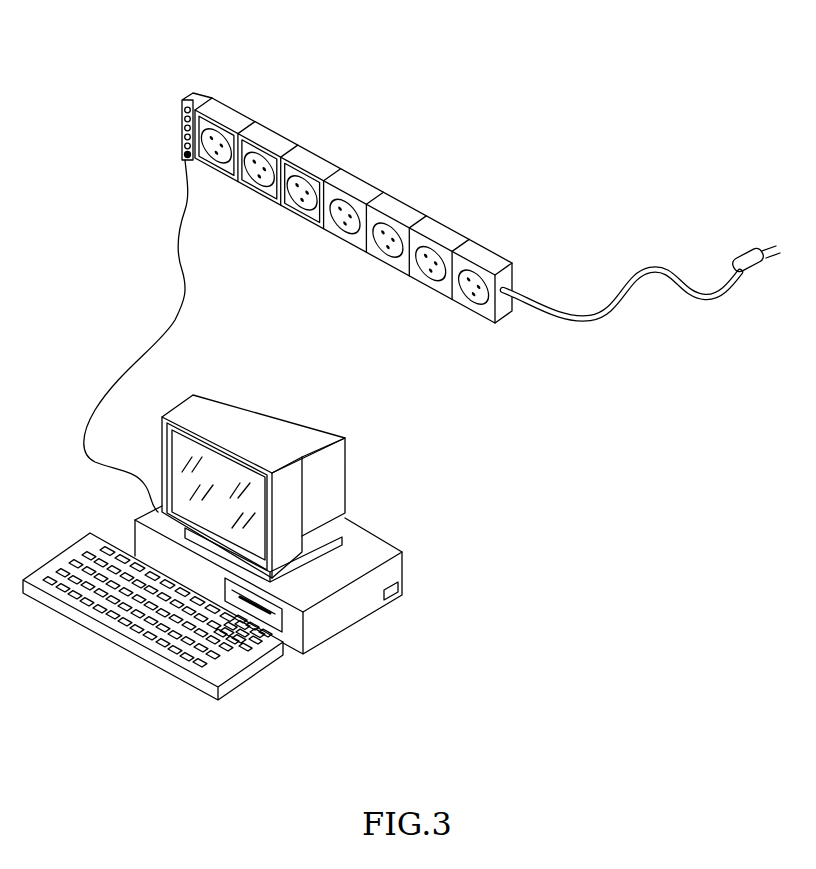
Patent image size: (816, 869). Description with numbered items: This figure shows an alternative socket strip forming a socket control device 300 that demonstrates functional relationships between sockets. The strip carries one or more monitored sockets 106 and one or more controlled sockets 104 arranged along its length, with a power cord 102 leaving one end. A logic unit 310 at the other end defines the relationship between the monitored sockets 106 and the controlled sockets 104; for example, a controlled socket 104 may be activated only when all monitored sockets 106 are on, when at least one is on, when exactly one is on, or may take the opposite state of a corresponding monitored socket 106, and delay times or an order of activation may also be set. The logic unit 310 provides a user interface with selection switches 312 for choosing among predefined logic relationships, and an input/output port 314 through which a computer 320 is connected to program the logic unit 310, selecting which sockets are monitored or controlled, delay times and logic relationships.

The socket control device 300 is at (556, 133).
The logic unit 310 is at (188, 97).
The selection switches 312 is at (181, 136).
The input/output port 314 is at (183, 156).
The monitored sockets 106 is at (315, 160).
The controlled sockets 104 is at (485, 257).
The power cord with plug 102 is at (643, 268).
The computer 320 is at (377, 551).